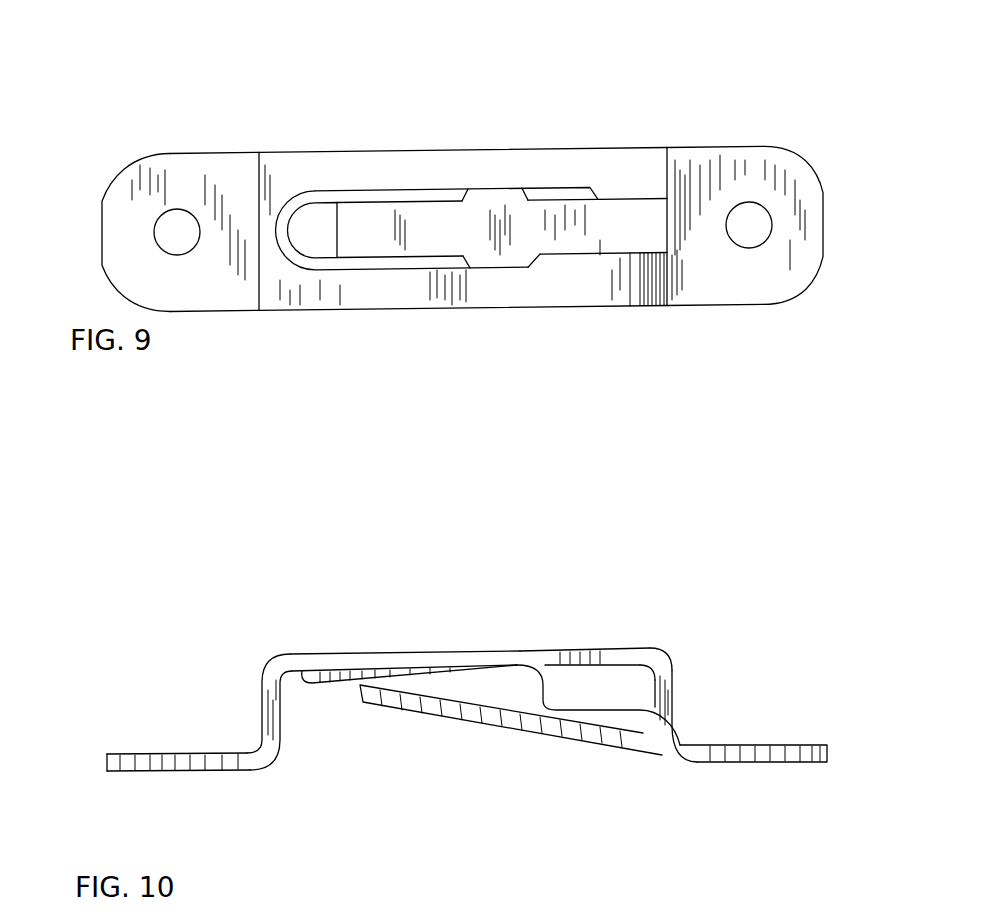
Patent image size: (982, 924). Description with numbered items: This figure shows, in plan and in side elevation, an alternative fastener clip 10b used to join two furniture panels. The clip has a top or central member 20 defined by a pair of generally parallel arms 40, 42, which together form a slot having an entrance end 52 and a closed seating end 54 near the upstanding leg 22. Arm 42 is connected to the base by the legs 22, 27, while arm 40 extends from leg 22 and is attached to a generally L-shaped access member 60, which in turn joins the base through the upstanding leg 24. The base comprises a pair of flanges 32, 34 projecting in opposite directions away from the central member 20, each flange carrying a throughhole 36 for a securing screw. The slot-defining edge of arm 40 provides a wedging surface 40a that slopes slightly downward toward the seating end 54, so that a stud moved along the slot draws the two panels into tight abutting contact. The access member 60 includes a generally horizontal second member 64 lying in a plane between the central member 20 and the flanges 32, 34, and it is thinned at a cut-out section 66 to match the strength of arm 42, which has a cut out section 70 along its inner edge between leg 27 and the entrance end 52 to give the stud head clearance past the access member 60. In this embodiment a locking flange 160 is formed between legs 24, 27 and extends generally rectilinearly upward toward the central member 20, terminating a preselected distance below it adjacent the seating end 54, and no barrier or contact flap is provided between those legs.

In FIG. 9, the fastener clip 10b is at (170, 112).
In FIG. 10, the fastener clip 10b is at (184, 671).
In FIG. 9, the central member 20 is at (333, 160).
In FIG. 9, the upstanding leg 22 is at (257, 168).
In FIG. 10, the upstanding leg 22 is at (270, 752).
In FIG. 9, the upstanding leg 24 is at (668, 278).
In FIG. 10, the upstanding leg 24 is at (663, 732).
In FIG. 9, the upstanding leg 27 is at (668, 155).
In FIG. 10, the upstanding leg 27 is at (663, 692).
In FIG. 9, the flange 32 is at (127, 263).
In FIG. 10, the flange 32 is at (123, 770).
In FIG. 9, the flange 34 is at (813, 222).
In FIG. 10, the flange 34 is at (785, 755).
In FIG. 9, the throughhole 36 is at (163, 235).
In FIG. 9, the arm 40 is at (350, 297).
In FIG. 10, the arm 40 is at (310, 655).
In FIG. 10, the wedging surface 40a is at (330, 680).
In FIG. 9, the arm 42 is at (451, 157).
In FIG. 10, the arm 42 is at (607, 647).
In FIG. 9, the entrance end 52 is at (437, 243).
In FIG. 9, the seating end 54 is at (315, 243).
In FIG. 9, the access member 60 is at (592, 293).
In FIG. 9, the second member 64 is at (632, 290).
In FIG. 9, the cut-out section 66 is at (533, 265).
In FIG. 9, the cut out section 70 is at (566, 187).
In FIG. 10, the cut out section 70 is at (560, 657).
In FIG. 9, the locking flange 160 is at (497, 218).
In FIG. 10, the locking flange 160 is at (468, 712).